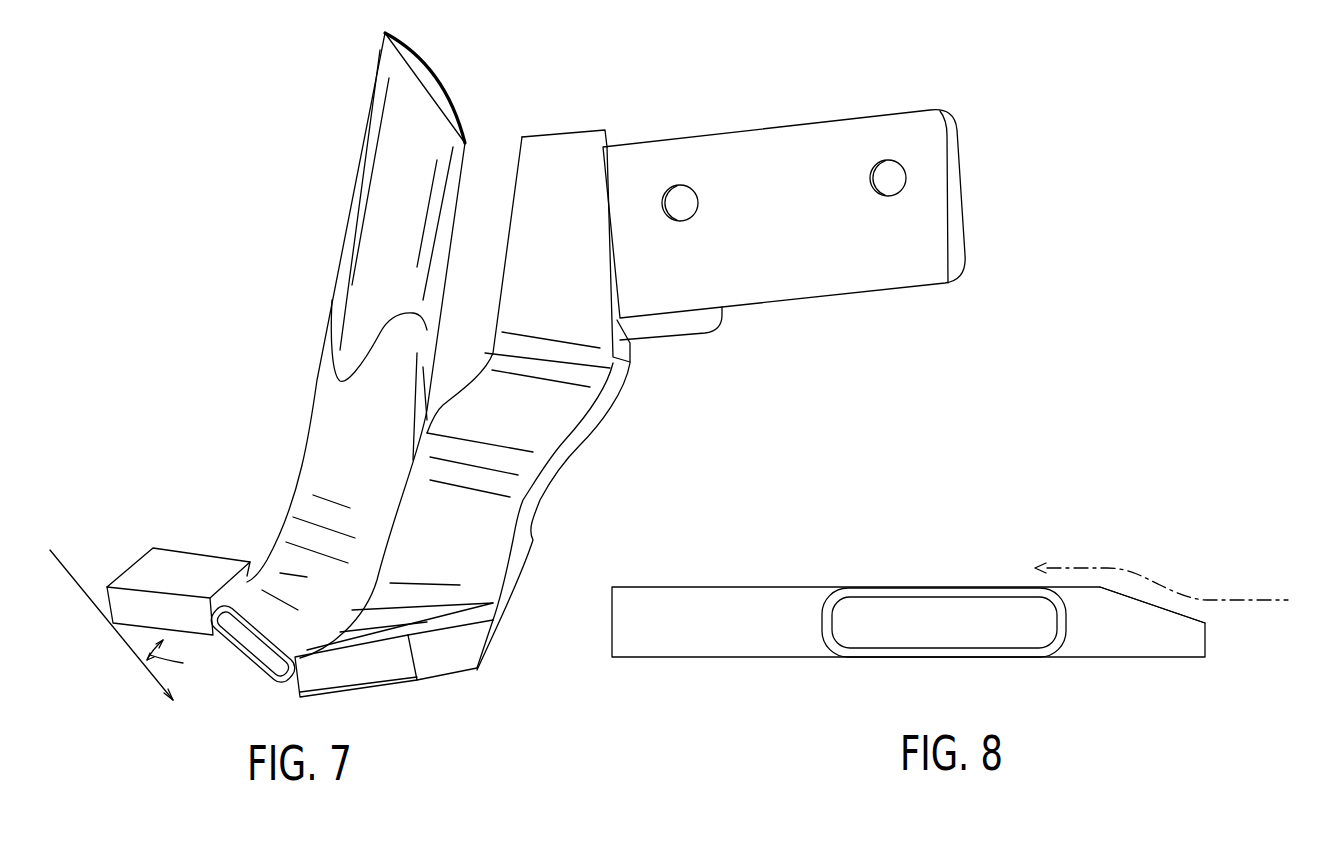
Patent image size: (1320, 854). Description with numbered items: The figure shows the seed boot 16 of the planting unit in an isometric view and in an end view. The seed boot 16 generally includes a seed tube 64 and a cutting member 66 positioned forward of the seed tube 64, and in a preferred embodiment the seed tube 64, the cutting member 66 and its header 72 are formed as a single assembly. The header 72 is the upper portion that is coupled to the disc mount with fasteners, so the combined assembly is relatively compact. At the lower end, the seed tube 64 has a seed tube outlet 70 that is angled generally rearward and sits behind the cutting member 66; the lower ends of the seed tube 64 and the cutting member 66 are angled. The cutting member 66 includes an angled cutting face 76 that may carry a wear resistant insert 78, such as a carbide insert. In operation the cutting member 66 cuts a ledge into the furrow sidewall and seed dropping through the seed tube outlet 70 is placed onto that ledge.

In FIG. 7, the seed boot 16 is at (213, 263).
In FIG. 8, the seed boot 16 is at (990, 557).
In FIG. 7, the seed tube 64 is at (320, 468).
In FIG. 8, the seed tube 64 is at (868, 653).
In FIG. 8, the cutting member 66 is at (1157, 637).
In FIG. 7, the seed tube outlet 70 is at (260, 653).
In FIG. 8, the seed tube outlet 70 is at (978, 650).
In FIG. 7, the header 72 is at (773, 140).
In FIG. 7, the angled cutting face 76 is at (450, 642).
In FIG. 8, the angled cutting face 76 is at (1153, 605).
In FIG. 7, the wear resistant insert 78 is at (358, 675).